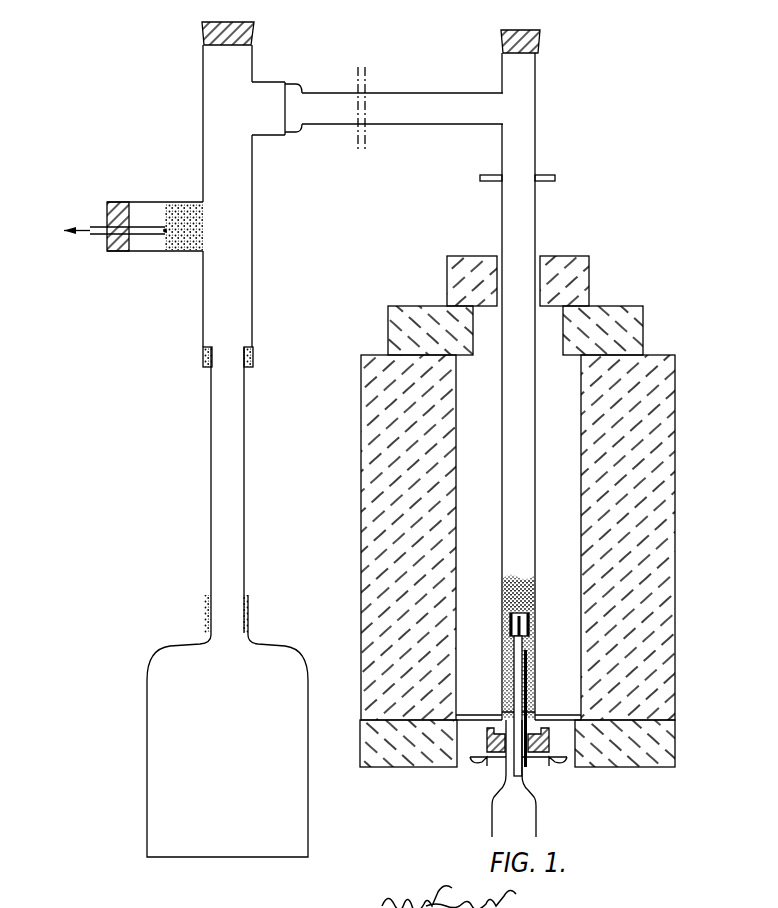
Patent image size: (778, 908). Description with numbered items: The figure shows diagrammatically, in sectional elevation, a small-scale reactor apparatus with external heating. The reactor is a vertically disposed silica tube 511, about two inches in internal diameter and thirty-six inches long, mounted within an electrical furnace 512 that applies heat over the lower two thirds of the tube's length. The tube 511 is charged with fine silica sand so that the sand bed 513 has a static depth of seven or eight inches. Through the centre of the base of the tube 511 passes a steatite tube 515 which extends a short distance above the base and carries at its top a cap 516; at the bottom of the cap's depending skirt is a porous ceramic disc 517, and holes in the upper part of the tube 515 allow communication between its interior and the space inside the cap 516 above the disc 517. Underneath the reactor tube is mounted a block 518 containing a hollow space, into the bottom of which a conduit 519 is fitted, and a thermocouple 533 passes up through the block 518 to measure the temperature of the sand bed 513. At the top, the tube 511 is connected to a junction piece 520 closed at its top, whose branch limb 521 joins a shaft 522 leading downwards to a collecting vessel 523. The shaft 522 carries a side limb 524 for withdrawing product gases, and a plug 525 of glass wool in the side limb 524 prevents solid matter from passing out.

The silica tube 511 is at (545, 222).
The electrical furnace 512 is at (602, 466).
The sand bed 513 is at (525, 585).
The steatite tube 515 is at (514, 660).
The cap 516 is at (525, 618).
The porous ceramic disc 517 is at (510, 633).
The block 518 is at (500, 760).
The conduit 519 is at (490, 812).
The junction piece 520 is at (545, 141).
The branch limb 521 is at (418, 93).
The shaft 522 is at (213, 145).
The collecting vessel 523 is at (300, 620).
The side limb 524 is at (147, 252).
The plug of glass wool 525 is at (182, 208).
The thermocouple 533 is at (525, 762).